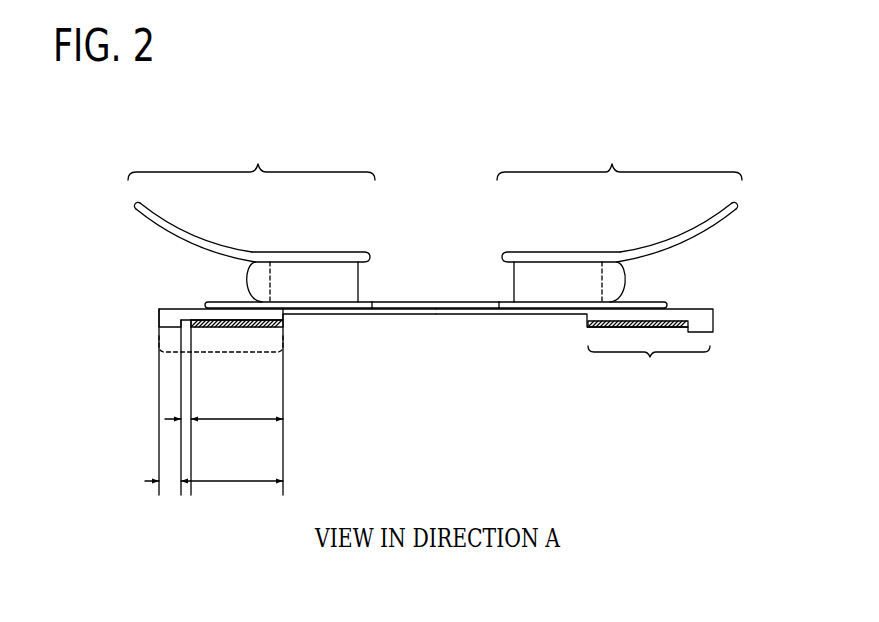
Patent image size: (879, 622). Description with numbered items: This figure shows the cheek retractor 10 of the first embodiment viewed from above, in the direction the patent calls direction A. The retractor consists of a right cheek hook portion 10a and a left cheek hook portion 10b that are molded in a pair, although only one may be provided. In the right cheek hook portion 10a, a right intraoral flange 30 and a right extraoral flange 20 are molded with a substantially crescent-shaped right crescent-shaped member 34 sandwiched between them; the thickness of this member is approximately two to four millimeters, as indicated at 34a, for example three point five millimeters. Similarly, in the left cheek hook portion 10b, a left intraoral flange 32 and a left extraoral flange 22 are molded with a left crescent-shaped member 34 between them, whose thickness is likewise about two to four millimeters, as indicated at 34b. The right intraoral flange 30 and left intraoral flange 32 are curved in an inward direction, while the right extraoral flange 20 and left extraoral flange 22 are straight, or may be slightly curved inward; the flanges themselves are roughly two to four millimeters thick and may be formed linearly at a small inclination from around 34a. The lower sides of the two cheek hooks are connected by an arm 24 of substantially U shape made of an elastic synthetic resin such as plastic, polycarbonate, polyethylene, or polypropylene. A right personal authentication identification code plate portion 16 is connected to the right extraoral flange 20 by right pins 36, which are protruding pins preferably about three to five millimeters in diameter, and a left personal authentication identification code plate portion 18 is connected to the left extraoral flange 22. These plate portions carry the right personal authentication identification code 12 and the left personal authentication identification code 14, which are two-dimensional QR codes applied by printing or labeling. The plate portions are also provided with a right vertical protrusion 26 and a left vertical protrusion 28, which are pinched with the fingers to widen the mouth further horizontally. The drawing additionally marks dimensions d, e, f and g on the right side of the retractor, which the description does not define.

The cheek retractor 10 is at (534, 106).
The right cheek hook portion 10a is at (250, 220).
The left cheek hook portion 10b is at (623, 220).
The right personal authentication identification code 12 is at (250, 330).
The left personal authentication identification code 14 is at (620, 325).
The right personal authentication identification code plate portion 16 is at (222, 354).
The left personal authentication identification code plate portion 18 is at (650, 357).
The right extraoral flange 20 is at (296, 310).
The left extraoral flange 22 is at (577, 312).
The arm 24 is at (452, 312).
The right vertical protrusion 26 is at (175, 334).
The left vertical protrusion 28 is at (700, 332).
The right intraoral flange 30 is at (165, 216).
The left intraoral flange 32 is at (707, 218).
The crescent-shaped member 34 is at (315, 273).
The thickness portion of right crescent-shaped member 34a is at (258, 280).
The thickness portion of left crescent-shaped member 34b is at (612, 278).
The right pins 36 is at (555, 273).
The dimension d is at (174, 483).
The dimension e is at (234, 483).
The dimension f is at (236, 421).
The dimension g is at (187, 434).